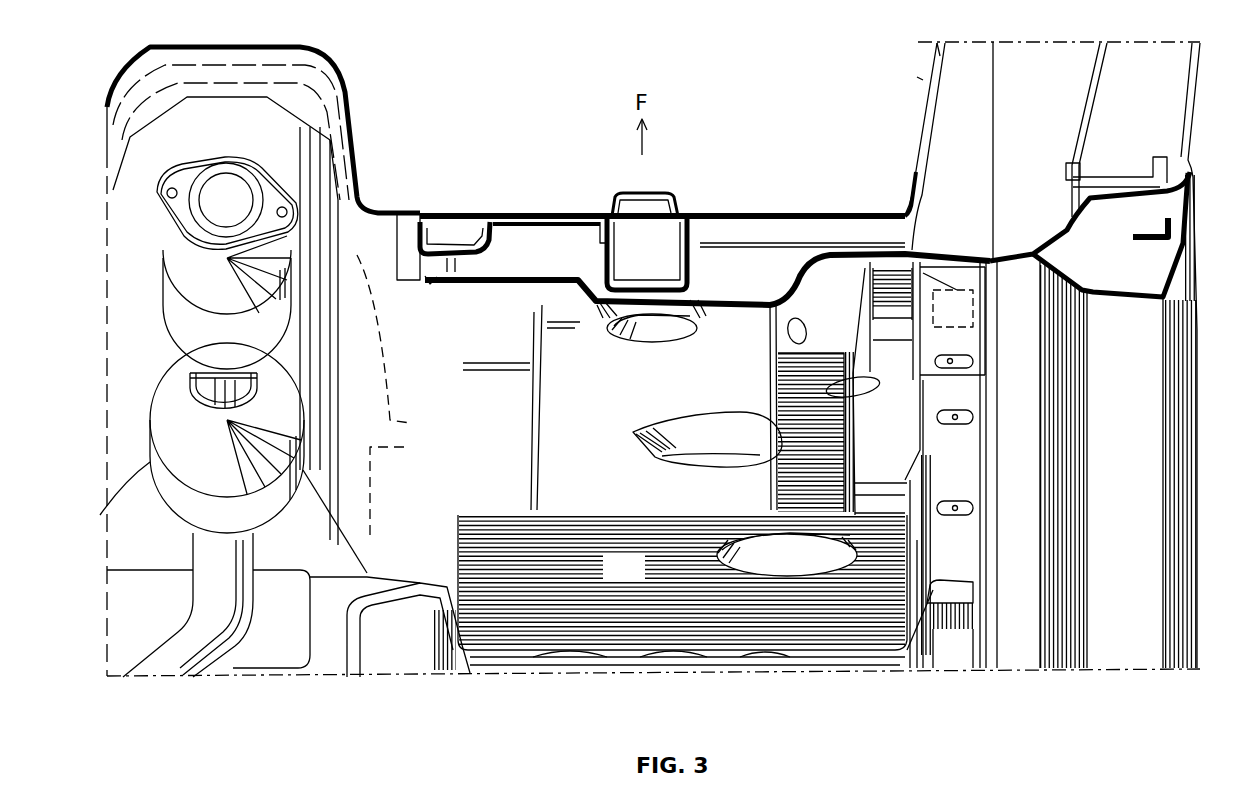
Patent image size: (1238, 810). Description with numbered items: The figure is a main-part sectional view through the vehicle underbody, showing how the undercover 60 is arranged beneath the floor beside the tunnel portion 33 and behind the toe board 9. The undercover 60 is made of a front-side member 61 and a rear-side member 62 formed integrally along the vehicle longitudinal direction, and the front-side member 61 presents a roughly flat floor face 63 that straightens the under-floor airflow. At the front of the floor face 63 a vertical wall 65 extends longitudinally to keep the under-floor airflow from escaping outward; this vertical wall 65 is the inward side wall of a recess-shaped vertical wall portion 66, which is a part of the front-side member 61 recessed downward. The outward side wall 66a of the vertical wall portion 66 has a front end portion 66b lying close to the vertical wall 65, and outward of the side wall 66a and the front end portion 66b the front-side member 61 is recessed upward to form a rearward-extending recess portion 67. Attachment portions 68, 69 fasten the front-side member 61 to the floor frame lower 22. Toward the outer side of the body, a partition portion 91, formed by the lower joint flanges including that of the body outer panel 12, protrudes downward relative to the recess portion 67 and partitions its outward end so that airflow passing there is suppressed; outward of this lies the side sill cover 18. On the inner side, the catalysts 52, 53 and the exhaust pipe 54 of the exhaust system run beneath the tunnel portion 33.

The toe board 9 is at (566, 212).
The body outer panel 12 is at (1091, 97).
The side sill cover 18 is at (1070, 278).
The floor frame lower 22 is at (605, 262).
The tunnel portion 33 is at (125, 358).
The catalyst 52 is at (166, 302).
The catalyst 53 is at (150, 437).
The exhaust pipe 54 is at (173, 628).
The undercover 60 is at (722, 296).
The front-side member 61 is at (511, 276).
The rear-side member 62 is at (700, 669).
The floor face 63 is at (682, 582).
The vertical wall 65 is at (762, 316).
The vertical wall portion 66 is at (805, 497).
The side wall 66a is at (860, 388).
The front end portion 66b is at (800, 338).
The recess portion 67 is at (893, 290).
The attachment portion 68 is at (696, 462).
The attachment portion 69 is at (795, 570).
The partition portion 91 is at (977, 271).